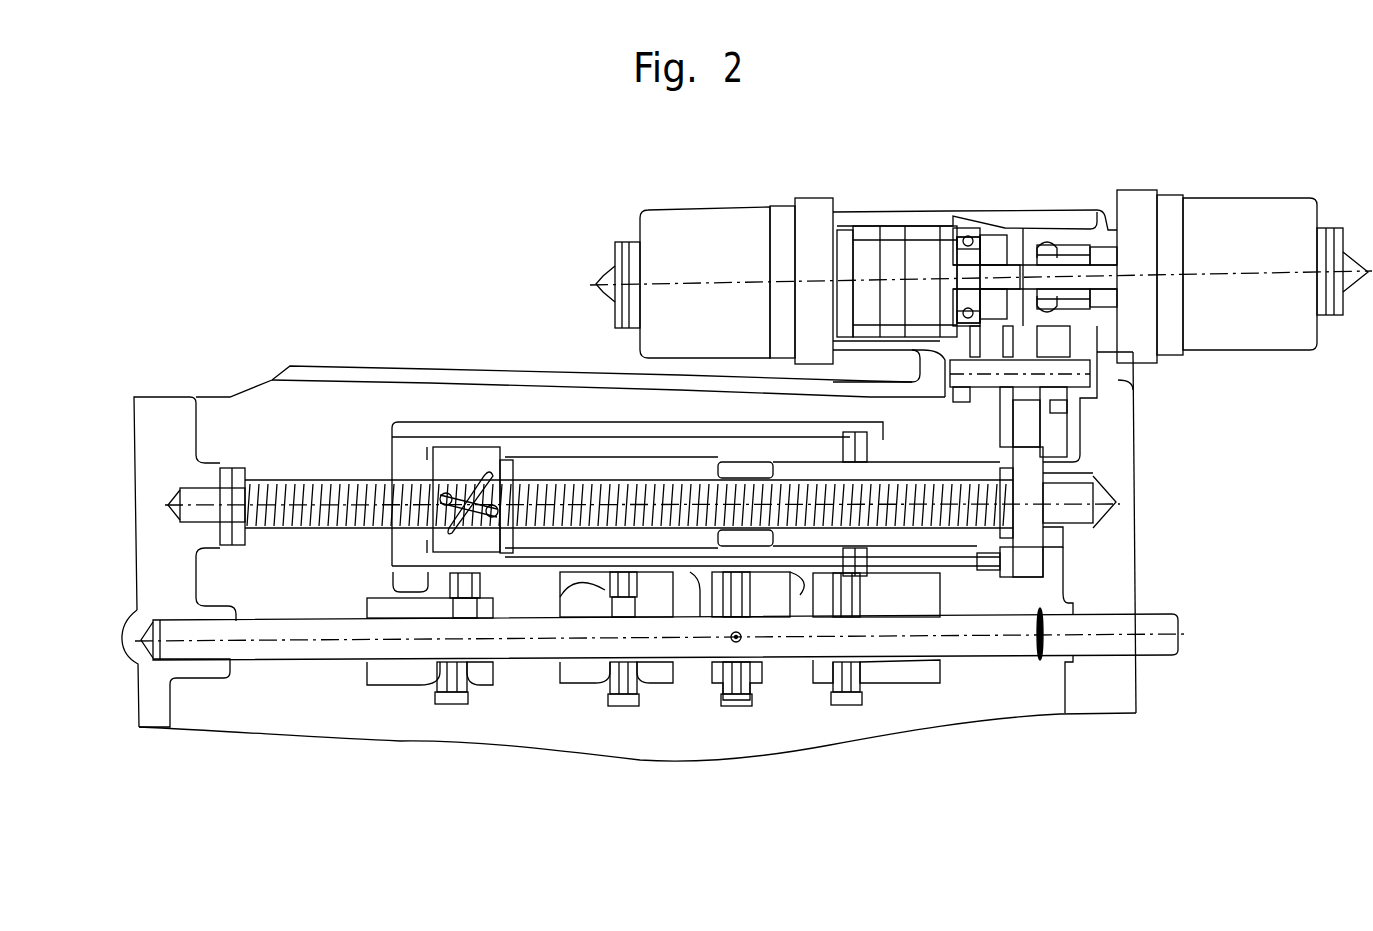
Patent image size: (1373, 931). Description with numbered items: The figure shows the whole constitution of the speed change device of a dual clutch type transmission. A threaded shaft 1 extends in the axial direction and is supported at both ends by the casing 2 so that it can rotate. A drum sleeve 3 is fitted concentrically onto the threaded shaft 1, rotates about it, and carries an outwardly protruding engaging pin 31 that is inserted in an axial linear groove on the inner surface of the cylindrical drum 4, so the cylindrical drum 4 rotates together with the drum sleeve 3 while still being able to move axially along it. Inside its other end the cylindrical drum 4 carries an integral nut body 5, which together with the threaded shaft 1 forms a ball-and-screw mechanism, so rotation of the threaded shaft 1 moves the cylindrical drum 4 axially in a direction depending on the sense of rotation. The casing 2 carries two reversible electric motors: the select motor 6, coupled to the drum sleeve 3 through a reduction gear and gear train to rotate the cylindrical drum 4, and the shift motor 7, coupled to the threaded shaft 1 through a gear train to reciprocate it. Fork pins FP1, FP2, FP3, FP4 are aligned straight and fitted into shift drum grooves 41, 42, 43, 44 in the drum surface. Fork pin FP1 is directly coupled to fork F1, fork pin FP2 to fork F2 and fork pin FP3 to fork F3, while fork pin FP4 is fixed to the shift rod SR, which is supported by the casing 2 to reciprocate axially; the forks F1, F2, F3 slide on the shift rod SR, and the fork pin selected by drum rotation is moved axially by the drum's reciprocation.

The threaded shaft 1 is at (320, 482).
The casing 2 is at (152, 565).
The drum sleeve 3 is at (962, 548).
The cylindrical drum 4 is at (550, 430).
The nut body 5 is at (465, 458).
The select motor 6 is at (683, 222).
The shift motor 7 is at (1235, 218).
The engaging pin 31 is at (880, 446).
The shift drum groove 41 is at (420, 592).
The shift drum groove 42 is at (575, 590).
The shift drum groove 43 is at (800, 592).
The shift drum groove 44 is at (700, 576).
The fork F1 is at (385, 672).
The fork F2 is at (575, 679).
The fork F3 is at (903, 676).
The fork pin FP1 is at (484, 628).
The fork pin FP2 is at (640, 626).
The fork pin FP3 is at (818, 620).
The fork pin FP4 is at (745, 628).
The shift rod SR is at (980, 656).